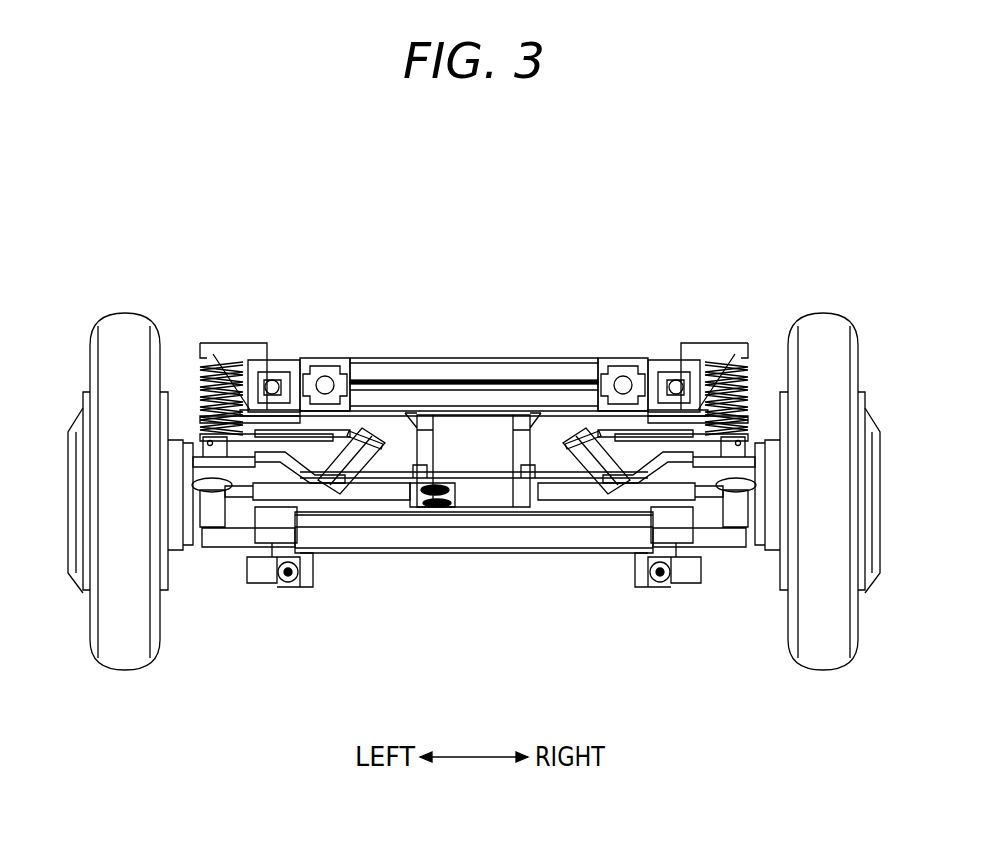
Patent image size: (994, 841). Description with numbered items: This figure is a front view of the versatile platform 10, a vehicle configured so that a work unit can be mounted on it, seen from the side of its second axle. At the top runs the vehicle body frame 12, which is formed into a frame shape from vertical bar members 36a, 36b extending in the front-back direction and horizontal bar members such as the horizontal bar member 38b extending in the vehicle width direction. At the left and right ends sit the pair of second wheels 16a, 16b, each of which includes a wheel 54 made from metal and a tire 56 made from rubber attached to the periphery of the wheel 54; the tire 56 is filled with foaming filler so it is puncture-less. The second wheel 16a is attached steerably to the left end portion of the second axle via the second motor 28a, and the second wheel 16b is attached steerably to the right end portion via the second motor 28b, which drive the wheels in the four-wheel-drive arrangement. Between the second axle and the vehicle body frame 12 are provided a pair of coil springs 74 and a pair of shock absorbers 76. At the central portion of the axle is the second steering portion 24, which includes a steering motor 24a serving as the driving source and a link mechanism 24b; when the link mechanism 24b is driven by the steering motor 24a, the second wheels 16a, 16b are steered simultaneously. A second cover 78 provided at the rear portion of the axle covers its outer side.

The versatile platform 10 is at (139, 127).
The vehicle body frame 12 is at (435, 352).
The second wheel 16a is at (122, 303).
The second wheel 16b is at (826, 303).
The second steering portion 24 is at (480, 507).
The steering motor 24a is at (465, 445).
The link mechanism 24b is at (325, 492).
The second motor 28a is at (173, 553).
The second motor 28b is at (777, 548).
The vertical bar member 36a is at (316, 358).
The vertical bar member 36b is at (632, 358).
The horizontal bar member 38b is at (489, 358).
The wheel 54 is at (78, 460).
The tire 56 is at (118, 363).
The coil spring 74 is at (203, 385).
The shock absorber 76 is at (350, 467).
The second cover 78 is at (529, 535).